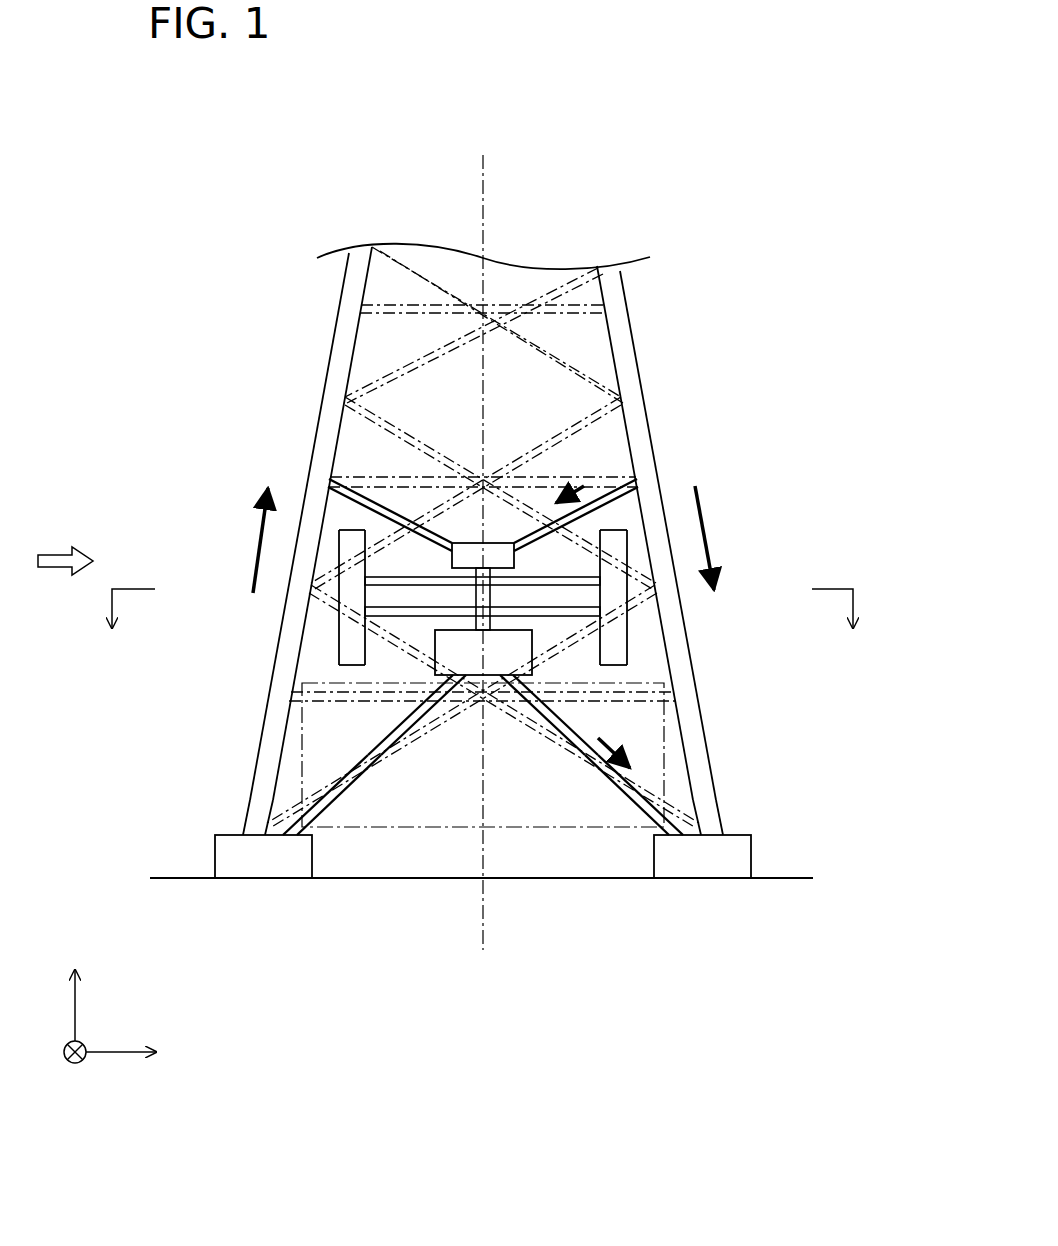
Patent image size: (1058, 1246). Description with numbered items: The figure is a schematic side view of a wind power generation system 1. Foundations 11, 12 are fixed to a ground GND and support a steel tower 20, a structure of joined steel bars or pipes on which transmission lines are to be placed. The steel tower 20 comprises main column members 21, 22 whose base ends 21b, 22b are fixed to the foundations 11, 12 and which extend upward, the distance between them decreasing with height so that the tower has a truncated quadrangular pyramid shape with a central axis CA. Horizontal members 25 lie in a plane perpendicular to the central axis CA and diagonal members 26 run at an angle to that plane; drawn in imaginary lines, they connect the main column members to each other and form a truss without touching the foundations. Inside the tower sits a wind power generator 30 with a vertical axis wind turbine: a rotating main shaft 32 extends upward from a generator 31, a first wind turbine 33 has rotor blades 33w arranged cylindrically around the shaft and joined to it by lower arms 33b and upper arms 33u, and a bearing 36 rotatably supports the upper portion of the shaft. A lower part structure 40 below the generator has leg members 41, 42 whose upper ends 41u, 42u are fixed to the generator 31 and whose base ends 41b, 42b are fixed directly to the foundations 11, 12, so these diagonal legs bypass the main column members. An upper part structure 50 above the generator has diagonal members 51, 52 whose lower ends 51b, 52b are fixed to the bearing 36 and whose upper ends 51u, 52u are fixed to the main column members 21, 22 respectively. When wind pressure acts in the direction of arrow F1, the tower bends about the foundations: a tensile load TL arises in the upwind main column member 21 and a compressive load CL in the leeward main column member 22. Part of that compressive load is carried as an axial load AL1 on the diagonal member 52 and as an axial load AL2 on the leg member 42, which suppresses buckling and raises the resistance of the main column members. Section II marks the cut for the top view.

The wind power generation system 1 is at (837, 97).
The steel tower 20 is at (765, 240).
The main column member 21 is at (357, 265).
The base end 21b is at (250, 840).
The main column member 22 is at (610, 275).
The base end 22b is at (735, 838).
The horizontal members 25 is at (392, 306).
The diagonal members 26 is at (395, 352).
The wind power generator 30 is at (818, 555).
The generator 31 is at (509, 645).
The rotating main shaft 32 is at (620, 585).
The first wind turbine 33 is at (635, 630).
The upper arms 33u is at (345, 630).
The lower arms 33b is at (350, 660).
The rotor blades 33w is at (340, 540).
The bearing 36 is at (488, 553).
The lower part structure 40 is at (513, 830).
The leg member 41 is at (360, 760).
The upper end 41u is at (450, 680).
The base end 41b is at (284, 840).
The leg member 42 is at (575, 730).
The upper end 42u is at (520, 688).
The base end 42b is at (673, 840).
The upper part structure 50 is at (380, 506).
The diagonal member 51 is at (330, 483).
The upper end 51u is at (410, 485).
The lower end 51b is at (420, 533).
The diagonal member 52 is at (640, 483).
The upper end 52u is at (560, 495).
The lower end 52b is at (560, 528).
The foundation 11 is at (247, 862).
The foundation 12 is at (724, 862).
The ground GND is at (810, 878).
The central axis CA is at (487, 172).
The axial load AL1 is at (570, 495).
The axial load AL2 is at (615, 755).
The tensile load TL is at (250, 562).
The compressive load CL is at (718, 562).
The arrow F1 (wind pressure direction) F1 is at (62, 552).
The section II- II is at (483, 627).